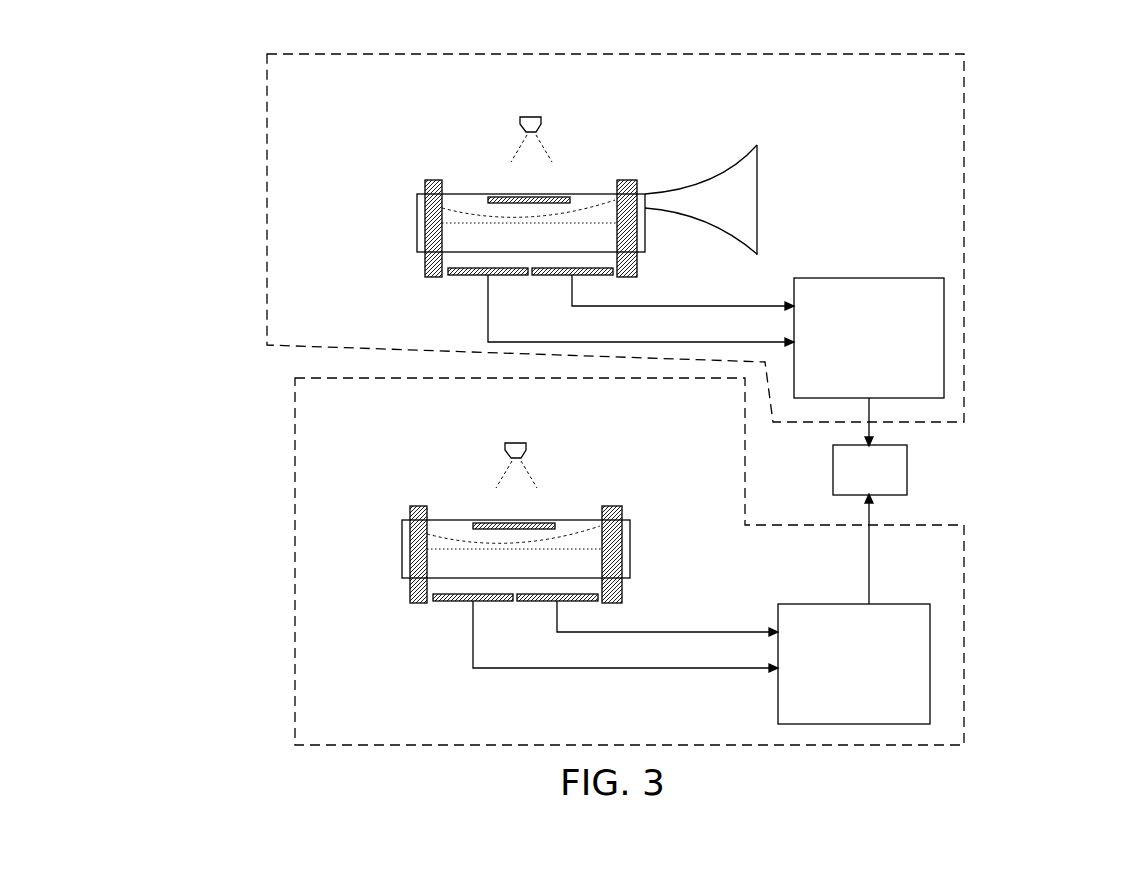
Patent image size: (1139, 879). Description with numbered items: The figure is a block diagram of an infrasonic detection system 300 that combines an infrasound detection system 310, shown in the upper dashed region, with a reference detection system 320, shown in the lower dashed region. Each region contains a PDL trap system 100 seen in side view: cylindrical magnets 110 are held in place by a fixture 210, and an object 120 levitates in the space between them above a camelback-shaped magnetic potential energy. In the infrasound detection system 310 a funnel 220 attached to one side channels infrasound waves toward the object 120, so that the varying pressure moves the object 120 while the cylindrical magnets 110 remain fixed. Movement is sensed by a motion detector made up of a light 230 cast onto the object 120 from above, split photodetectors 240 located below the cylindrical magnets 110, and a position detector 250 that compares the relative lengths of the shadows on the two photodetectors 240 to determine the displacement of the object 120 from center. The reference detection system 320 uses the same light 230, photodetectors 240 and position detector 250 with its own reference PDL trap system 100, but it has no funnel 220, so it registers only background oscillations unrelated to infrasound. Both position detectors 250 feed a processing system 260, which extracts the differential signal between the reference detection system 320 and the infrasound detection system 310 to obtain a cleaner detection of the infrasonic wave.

The PDL trap system 100 is at (452, 148).
The cylindrical magnets 110 is at (588, 200).
The object 120 is at (530, 203).
The fixture 210 is at (427, 193).
The funnel 220 is at (757, 212).
The light 230 is at (502, 285).
The photodetectors 240 is at (455, 277).
The position detector 250 is at (891, 388).
The processing system 260 is at (891, 485).
The infrasonic detection system 300 is at (1022, 93).
The infrasound detection system 310 is at (267, 218).
The reference detection system 320 is at (295, 570).